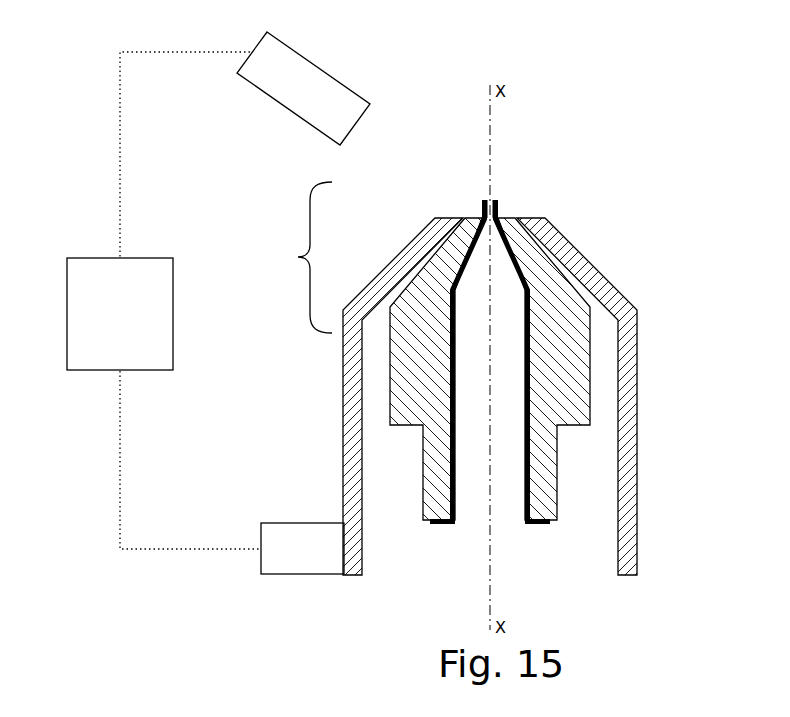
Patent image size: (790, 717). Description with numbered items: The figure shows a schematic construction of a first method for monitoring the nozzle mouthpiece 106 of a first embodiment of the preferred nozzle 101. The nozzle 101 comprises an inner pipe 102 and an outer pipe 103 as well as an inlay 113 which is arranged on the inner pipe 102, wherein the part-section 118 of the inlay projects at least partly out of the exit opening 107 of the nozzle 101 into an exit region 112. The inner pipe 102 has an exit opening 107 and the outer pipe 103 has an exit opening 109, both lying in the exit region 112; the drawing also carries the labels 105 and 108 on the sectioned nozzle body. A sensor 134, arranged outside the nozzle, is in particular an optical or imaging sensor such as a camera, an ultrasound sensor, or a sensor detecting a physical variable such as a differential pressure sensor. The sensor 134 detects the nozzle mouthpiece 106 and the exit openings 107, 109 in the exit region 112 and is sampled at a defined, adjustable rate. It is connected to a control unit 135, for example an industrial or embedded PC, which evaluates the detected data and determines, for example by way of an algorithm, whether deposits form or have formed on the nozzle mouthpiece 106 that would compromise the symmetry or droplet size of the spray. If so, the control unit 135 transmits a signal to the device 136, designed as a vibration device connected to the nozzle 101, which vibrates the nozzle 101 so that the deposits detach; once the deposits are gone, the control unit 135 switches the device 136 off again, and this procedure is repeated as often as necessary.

The nozzle 101 is at (633, 188).
The inner pipe 102 is at (542, 508).
The outer pipe 103 is at (630, 562).
The inner channel 105 is at (527, 406).
The nozzle mouthpiece 106 is at (297, 257).
The exit opening 107 is at (506, 214).
The annular gap 108 is at (609, 468).
The exit opening 109 is at (523, 214).
The exit region 112 is at (508, 180).
The inlay 113 is at (501, 215).
The part-section 118 is at (474, 209).
The sensor 134 is at (303, 72).
The control unit 135 is at (85, 268).
The device 136 is at (292, 557).